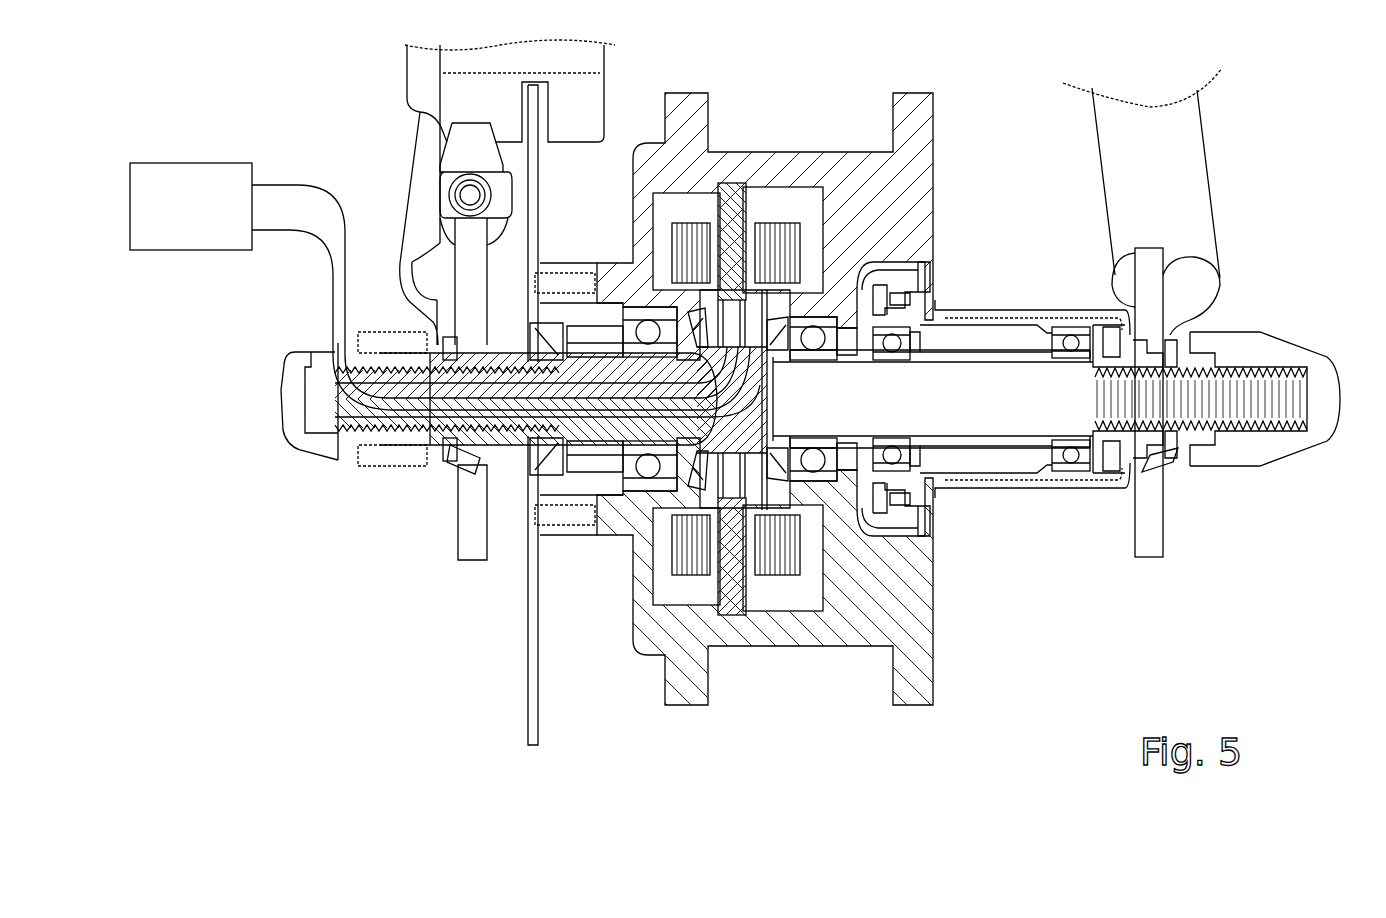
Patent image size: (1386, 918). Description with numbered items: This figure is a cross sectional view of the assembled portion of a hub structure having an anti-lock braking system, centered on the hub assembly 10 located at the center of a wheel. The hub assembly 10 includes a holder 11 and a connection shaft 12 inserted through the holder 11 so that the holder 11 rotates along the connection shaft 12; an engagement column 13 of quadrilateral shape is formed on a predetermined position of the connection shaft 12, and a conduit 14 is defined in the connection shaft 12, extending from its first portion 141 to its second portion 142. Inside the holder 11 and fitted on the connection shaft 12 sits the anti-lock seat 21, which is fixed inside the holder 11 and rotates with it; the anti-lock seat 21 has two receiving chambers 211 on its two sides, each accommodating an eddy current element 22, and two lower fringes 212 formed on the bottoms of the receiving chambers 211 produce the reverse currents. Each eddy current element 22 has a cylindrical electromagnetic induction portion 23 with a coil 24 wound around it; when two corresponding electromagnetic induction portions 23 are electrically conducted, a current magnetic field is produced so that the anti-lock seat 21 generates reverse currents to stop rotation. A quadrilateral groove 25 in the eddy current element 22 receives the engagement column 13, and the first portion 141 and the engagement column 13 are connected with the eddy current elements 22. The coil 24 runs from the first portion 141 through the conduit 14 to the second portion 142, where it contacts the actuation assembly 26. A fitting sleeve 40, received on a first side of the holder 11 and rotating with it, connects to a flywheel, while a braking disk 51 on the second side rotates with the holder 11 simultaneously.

The hub assembly 10 is at (1000, 52).
The holder 11 is at (790, 160).
The connection shaft 12 is at (993, 392).
The engagement column 13 is at (812, 350).
The conduit 14 is at (433, 390).
The first portion 141 is at (730, 347).
The second portion 142 is at (338, 405).
The anti-lock seat 21 is at (760, 745).
The receiving chambers 211 is at (670, 593).
The lower fringes 212 is at (724, 590).
The eddy current elements 22 is at (905, 750).
The electromagnetic induction portion 23 is at (805, 490).
The coil 24 is at (767, 570).
The quadrilateral groove 25 is at (782, 428).
The actuation assembly 26 is at (188, 182).
The fitting sleeve 40 is at (1039, 497).
The braking disk 51 is at (533, 623).